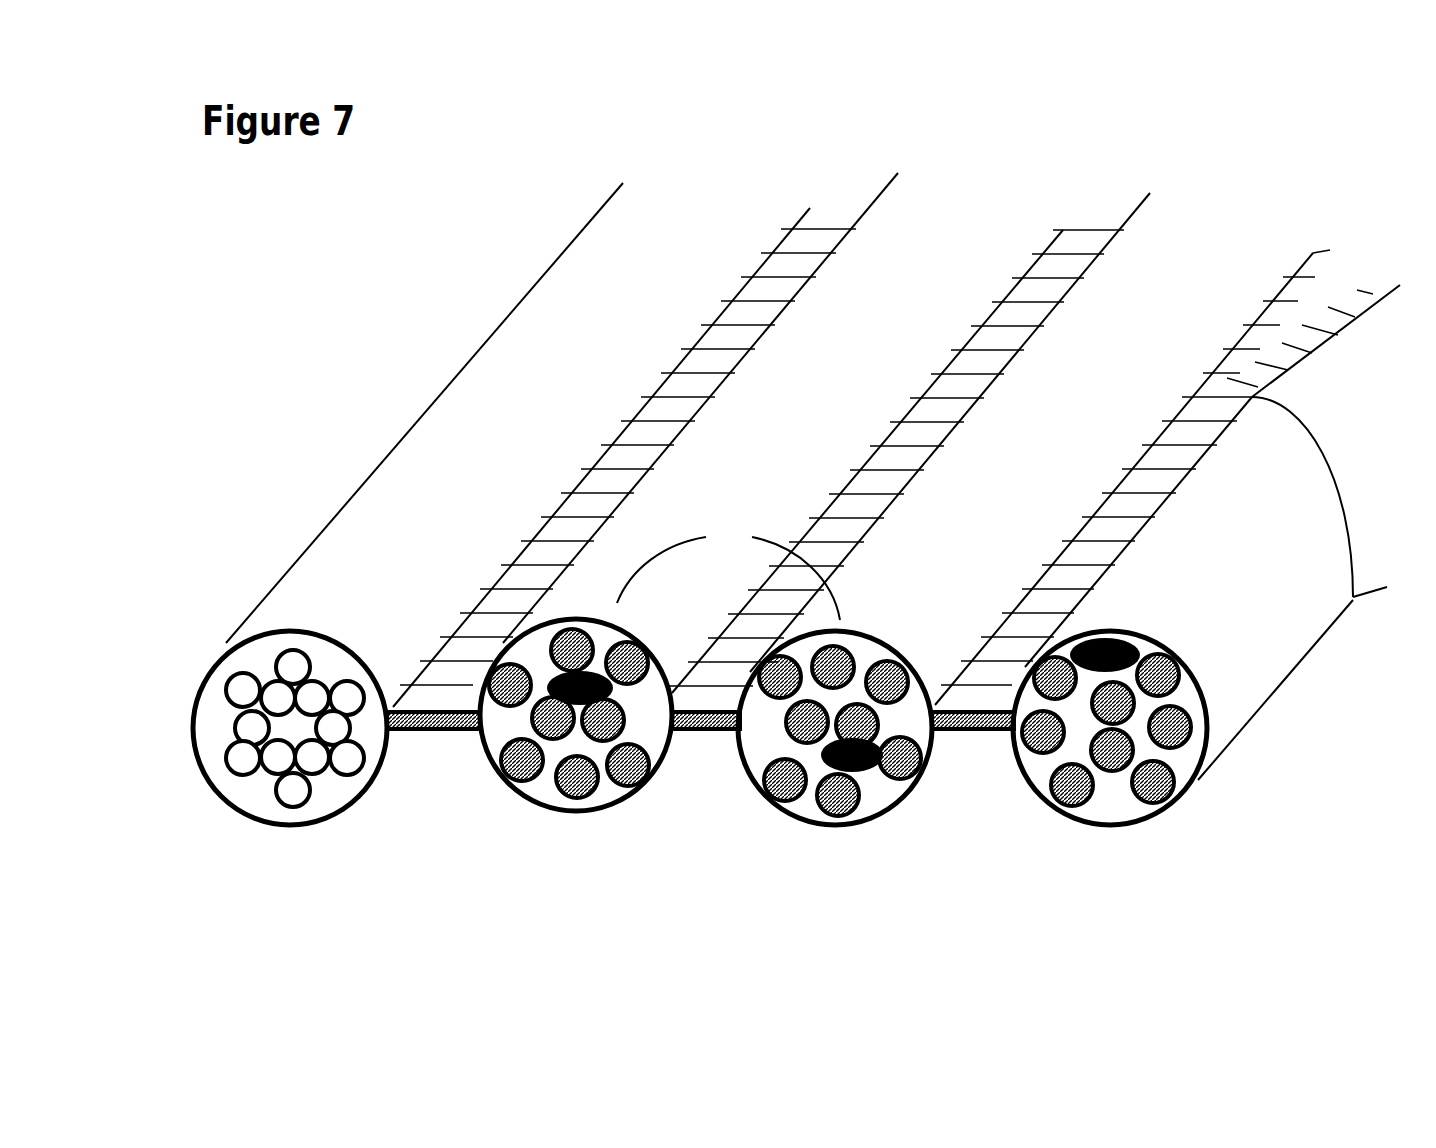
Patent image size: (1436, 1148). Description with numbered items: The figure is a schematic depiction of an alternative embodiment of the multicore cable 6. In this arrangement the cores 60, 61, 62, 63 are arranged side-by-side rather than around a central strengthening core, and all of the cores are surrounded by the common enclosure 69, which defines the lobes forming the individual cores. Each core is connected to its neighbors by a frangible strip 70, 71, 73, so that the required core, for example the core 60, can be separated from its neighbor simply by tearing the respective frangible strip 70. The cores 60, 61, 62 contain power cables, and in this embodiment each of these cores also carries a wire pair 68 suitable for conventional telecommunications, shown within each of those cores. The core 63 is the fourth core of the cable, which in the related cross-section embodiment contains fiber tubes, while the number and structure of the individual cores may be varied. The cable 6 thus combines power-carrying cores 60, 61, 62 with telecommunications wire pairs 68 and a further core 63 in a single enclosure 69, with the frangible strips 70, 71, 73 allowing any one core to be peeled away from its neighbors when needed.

The multicore cable 6 is at (424, 413).
The core 60 is at (1183, 712).
The core 61 is at (835, 754).
The core 62 is at (576, 739).
The core 63 is at (290, 707).
The wire pair 68 is at (843, 704).
The common enclosure 69 is at (728, 571).
The frangible strip 70 is at (1167, 470).
The frangible strip 71 is at (908, 440).
The frangible strip 73 is at (645, 440).